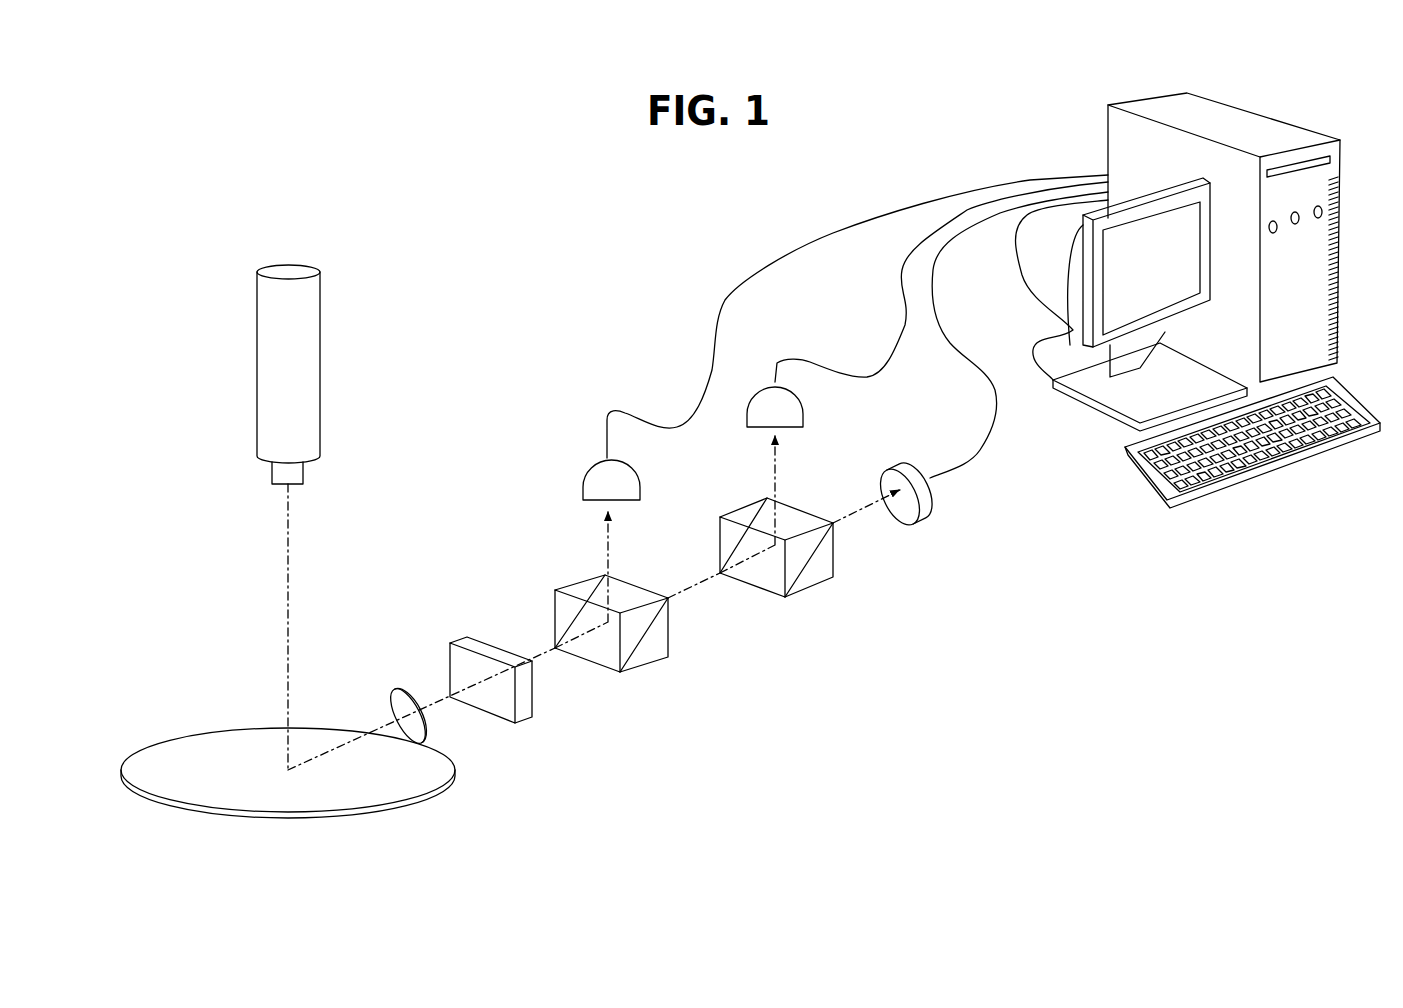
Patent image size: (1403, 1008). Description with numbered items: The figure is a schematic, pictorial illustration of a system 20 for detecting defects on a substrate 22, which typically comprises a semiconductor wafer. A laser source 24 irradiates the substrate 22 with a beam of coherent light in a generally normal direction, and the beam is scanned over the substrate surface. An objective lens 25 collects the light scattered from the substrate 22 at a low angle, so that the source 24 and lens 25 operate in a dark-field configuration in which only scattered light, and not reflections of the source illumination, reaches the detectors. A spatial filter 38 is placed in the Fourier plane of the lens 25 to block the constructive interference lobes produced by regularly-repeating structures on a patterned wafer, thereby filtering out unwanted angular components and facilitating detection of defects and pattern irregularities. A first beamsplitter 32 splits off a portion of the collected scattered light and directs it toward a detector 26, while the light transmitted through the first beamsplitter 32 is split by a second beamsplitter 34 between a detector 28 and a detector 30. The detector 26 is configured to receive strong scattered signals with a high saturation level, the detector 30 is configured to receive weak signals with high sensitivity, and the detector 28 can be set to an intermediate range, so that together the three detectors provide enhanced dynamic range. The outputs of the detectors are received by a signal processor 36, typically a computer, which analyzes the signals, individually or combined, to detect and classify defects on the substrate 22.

The system 20 is at (372, 156).
The substrate 22 is at (413, 785).
The laser source 24 is at (310, 348).
The objective lens 25 is at (425, 736).
The detector 26 is at (598, 476).
The detector 28 is at (758, 398).
The detector 30 is at (918, 466).
The first beamsplitter 32 is at (640, 657).
The second beamsplitter 34 is at (805, 583).
The signal processor 36 is at (1125, 462).
The spatial filter 38 is at (523, 713).